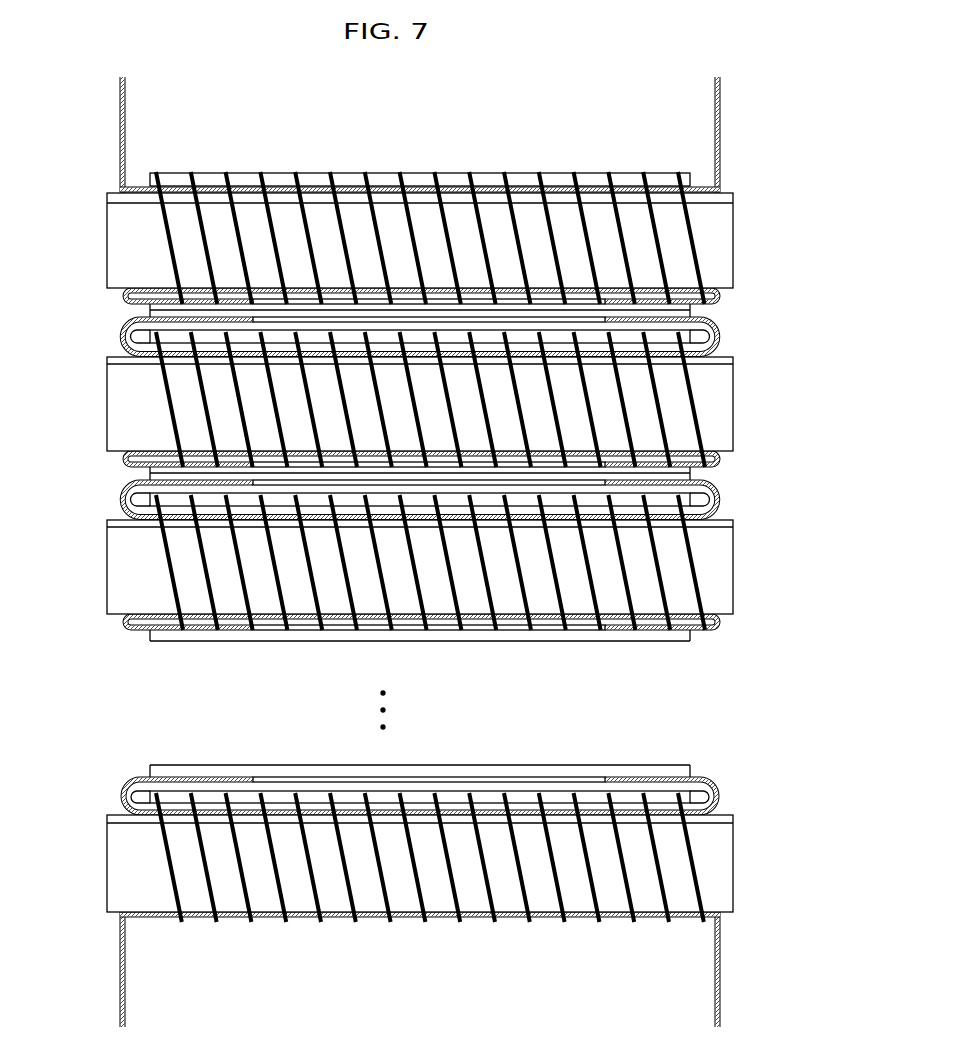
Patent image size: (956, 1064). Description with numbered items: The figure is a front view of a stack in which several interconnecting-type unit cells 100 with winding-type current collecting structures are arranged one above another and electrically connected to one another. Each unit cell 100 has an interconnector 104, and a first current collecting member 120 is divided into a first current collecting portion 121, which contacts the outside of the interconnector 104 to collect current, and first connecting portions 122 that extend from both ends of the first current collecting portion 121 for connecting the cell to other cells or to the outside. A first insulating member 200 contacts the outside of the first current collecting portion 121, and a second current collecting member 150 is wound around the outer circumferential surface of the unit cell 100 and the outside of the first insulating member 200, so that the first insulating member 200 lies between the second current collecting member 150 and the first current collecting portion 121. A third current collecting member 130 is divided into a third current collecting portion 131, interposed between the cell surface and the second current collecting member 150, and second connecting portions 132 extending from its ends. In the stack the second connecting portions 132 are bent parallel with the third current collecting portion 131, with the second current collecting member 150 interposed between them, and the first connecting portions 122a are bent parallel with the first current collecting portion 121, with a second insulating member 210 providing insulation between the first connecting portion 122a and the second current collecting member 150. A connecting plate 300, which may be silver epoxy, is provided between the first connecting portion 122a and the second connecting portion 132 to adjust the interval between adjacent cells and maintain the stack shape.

The unit cell 100 is at (105, 243).
The interconnector 104 is at (107, 198).
The first current collecting member 120 is at (471, 552).
The first current collecting portion 121 is at (134, 187).
The first connecting portion 122 is at (121, 119).
The first connecting portion 122a is at (702, 322).
The third current collecting member 130 is at (473, 445).
The third current collecting portion 131 is at (688, 290).
The second connecting portion 132 is at (698, 304).
The second current collecting member 150 is at (432, 218).
The first insulating member 200 is at (313, 180).
The second insulating member 210 is at (142, 330).
The connecting plate 300 is at (151, 311).